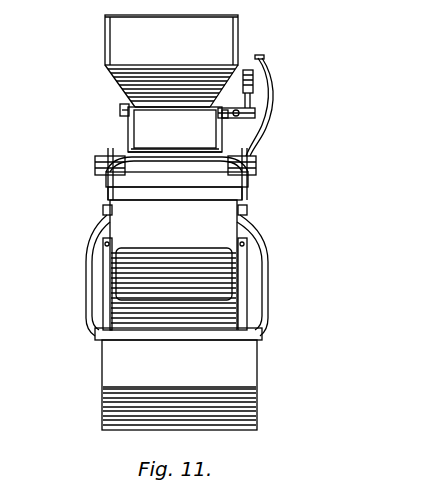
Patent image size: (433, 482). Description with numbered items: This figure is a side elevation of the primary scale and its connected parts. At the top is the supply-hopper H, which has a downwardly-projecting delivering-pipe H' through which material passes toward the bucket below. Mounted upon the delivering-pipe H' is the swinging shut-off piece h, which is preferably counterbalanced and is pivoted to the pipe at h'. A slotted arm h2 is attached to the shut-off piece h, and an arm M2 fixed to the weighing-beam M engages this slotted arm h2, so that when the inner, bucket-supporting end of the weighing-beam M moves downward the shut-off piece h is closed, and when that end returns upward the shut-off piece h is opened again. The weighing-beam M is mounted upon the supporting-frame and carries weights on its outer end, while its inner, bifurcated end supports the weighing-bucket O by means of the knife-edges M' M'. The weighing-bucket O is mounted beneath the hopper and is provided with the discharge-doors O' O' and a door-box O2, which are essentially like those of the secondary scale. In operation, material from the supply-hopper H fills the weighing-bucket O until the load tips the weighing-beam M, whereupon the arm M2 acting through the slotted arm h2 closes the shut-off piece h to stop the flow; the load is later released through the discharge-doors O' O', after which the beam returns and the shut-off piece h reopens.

The supply-hopper H is at (171, 61).
The delivering-pipe H' is at (175, 129).
The pivot h' is at (194, 121).
The swinging shut-off piece h is at (252, 118).
The slotted arm h2 is at (262, 80).
The arm M2 is at (270, 95).
The weighing-beam M is at (177, 178).
The knife-edges M' is at (172, 174).
The weighing-bucket O is at (177, 270).
The discharge-doors O' is at (209, 285).
The door-box O2 is at (179, 385).